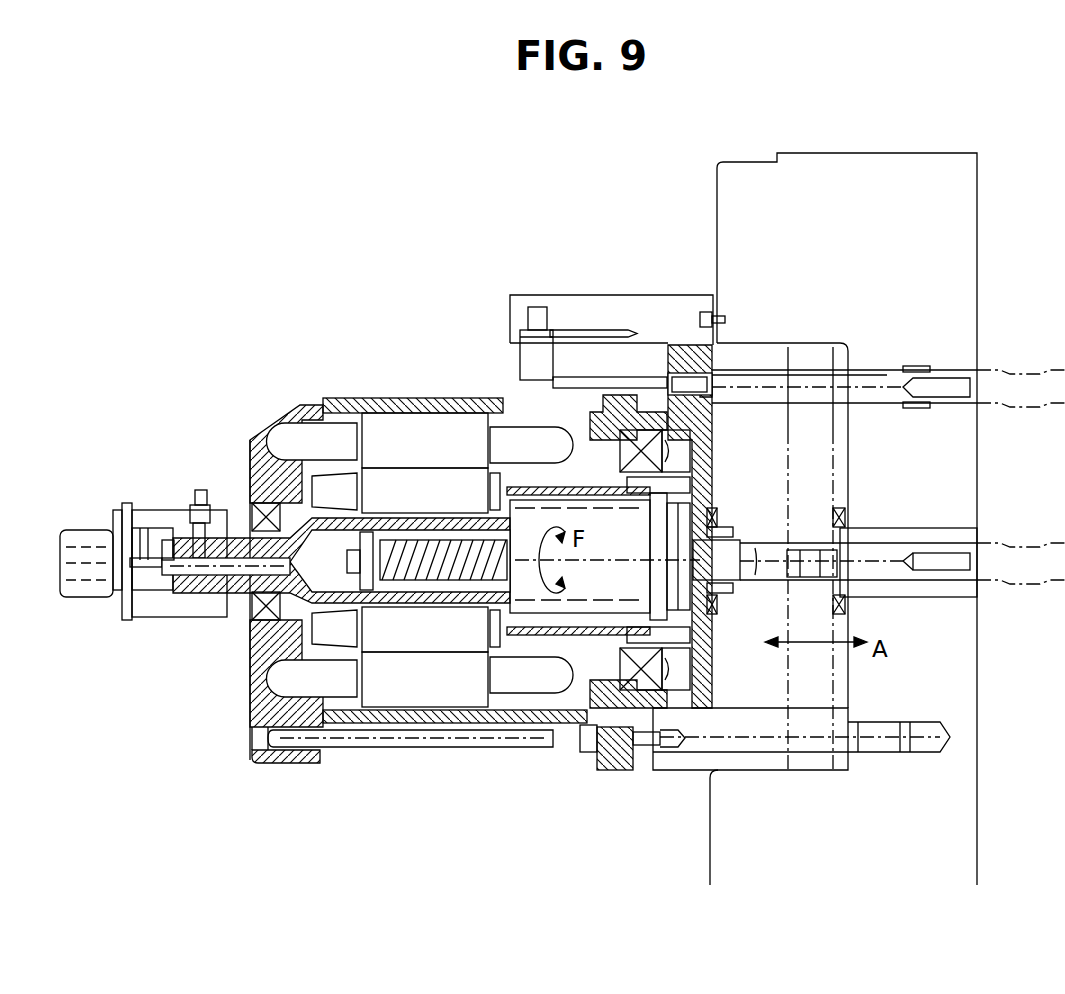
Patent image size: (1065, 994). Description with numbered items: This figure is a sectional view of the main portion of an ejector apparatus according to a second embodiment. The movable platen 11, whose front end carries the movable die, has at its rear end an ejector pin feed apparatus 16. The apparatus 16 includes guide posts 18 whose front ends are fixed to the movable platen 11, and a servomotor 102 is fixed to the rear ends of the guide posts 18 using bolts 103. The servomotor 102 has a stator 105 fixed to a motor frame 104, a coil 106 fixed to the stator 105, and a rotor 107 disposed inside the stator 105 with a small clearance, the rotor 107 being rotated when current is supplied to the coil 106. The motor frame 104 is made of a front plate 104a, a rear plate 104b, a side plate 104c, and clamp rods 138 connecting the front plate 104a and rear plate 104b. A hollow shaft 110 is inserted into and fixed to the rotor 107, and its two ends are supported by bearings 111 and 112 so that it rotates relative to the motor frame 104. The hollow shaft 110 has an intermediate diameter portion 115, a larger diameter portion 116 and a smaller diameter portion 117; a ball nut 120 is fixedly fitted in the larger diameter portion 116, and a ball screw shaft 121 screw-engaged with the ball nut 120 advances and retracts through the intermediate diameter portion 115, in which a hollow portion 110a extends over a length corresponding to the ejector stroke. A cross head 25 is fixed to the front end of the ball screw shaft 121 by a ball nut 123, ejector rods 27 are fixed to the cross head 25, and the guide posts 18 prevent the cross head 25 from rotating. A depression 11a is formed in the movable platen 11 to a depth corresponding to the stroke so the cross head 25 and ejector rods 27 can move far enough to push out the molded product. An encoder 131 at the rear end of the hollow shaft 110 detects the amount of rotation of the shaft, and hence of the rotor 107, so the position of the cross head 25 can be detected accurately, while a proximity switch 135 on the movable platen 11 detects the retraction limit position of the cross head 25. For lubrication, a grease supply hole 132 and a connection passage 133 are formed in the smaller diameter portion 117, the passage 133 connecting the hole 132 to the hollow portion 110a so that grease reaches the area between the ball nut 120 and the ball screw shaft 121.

The movable platen 11 is at (940, 241).
The depression 11a is at (765, 679).
The ejector pin feed apparatus 16 is at (658, 264).
The guide posts 18 is at (688, 752).
The cross head 25 is at (680, 347).
The ejector rods 27 is at (887, 375).
The servomotor 102 is at (427, 489).
The bolts 103 is at (593, 742).
The motor frame 104 is at (312, 400).
The front plate 104a is at (617, 397).
The rear plate 104b is at (272, 765).
The side plate 104c is at (433, 397).
The stator 105 is at (382, 423).
The coil 106 is at (287, 441).
The rotor 107 is at (443, 477).
The hollow shaft 110 is at (410, 607).
The hollow portion 110a is at (260, 660).
The bearing 111 is at (632, 692).
The bearing 112 is at (258, 610).
The intermediate diameter portion 115 is at (432, 605).
The larger diameter portion 116 is at (580, 640).
The smaller diameter portion 117 is at (190, 578).
The ball nut 120 is at (643, 568).
The ball screw shaft 121 is at (392, 620).
The ball nut 123 is at (722, 518).
The encoder 131 is at (87, 528).
The grease supply hole 132 is at (193, 497).
The connection passage 133 is at (205, 563).
The proximity switch 135 is at (545, 360).
The clamp rods 138 is at (497, 742).